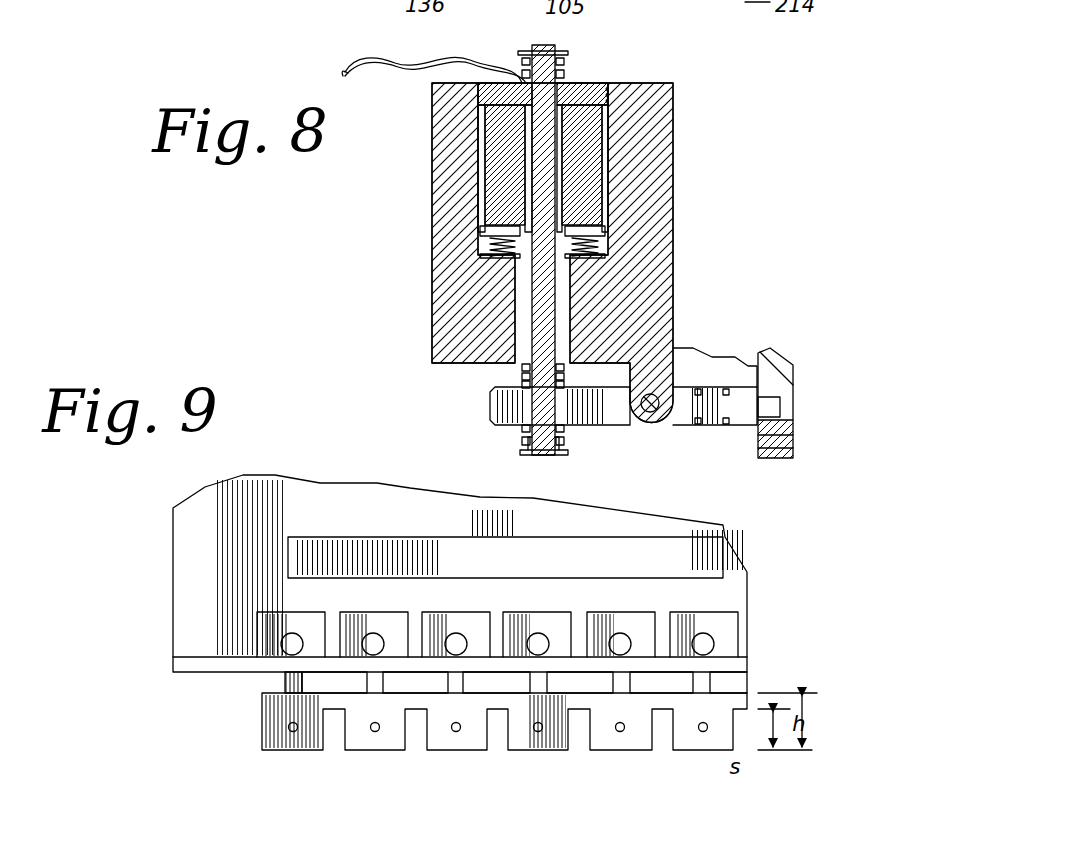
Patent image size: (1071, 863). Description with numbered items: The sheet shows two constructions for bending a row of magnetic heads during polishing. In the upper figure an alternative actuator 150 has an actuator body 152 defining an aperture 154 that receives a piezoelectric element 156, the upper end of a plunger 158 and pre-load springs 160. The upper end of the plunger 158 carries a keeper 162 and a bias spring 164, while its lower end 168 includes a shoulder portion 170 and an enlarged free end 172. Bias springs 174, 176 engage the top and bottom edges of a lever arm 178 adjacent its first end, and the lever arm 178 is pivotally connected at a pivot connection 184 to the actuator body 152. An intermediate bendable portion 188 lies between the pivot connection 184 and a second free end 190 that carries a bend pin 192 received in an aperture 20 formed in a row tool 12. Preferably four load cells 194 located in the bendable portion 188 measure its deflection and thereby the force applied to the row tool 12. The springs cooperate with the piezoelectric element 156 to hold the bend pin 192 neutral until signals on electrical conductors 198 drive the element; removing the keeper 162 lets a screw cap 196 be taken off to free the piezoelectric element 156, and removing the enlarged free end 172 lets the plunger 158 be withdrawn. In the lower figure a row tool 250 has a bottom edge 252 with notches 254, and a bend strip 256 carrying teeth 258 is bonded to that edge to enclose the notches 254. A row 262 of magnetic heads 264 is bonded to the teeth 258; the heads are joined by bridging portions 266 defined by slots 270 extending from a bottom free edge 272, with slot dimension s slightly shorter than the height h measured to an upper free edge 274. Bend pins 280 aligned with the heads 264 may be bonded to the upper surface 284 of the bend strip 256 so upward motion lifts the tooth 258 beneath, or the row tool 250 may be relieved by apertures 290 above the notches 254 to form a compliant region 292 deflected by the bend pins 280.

In FIG. 8, the row tool 12 is at (780, 363).
In FIG. 8, the aperture 20 is at (793, 410).
In FIG. 8, the actuator 150 is at (662, 80).
In FIG. 8, the actuator body 152 is at (440, 208).
In FIG. 8, the aperture 154 is at (603, 193).
In FIG. 8, the piezoelectric element 156 is at (585, 184).
In FIG. 8, the plunger 158 is at (557, 278).
In FIG. 8, the pre-load springs 160 is at (600, 248).
In FIG. 8, the keeper 162 is at (552, 52).
In FIG. 8, the bias spring 164 is at (553, 77).
In FIG. 8, the lower end 168 is at (543, 408).
In FIG. 8, the shoulder portion 170 is at (527, 347).
In FIG. 8, the enlarged free end 172 is at (537, 450).
In FIG. 8, the bias spring 174 is at (563, 378).
In FIG. 8, the bias spring 176 is at (560, 428).
In FIG. 8, the lever arm 178 is at (488, 402).
In FIG. 8, the pivot connection 184 is at (650, 397).
In FIG. 8, the intermediate bendable portion 188 is at (707, 403).
In FIG. 8, the second free end 190 is at (747, 373).
In FIG. 8, the bend pin 192 is at (782, 400).
In FIG. 8, the load cells 194 is at (700, 387).
In FIG. 8, the screw cap 196 is at (585, 82).
In FIG. 8, the electrical conductors 198 is at (395, 72).
In FIG. 9, the row tool 250 is at (320, 483).
In FIG. 9, the bottom edge 252 is at (228, 658).
In FIG. 9, the notches 254 is at (360, 612).
In FIG. 9, the bend strip 256 is at (750, 678).
In FIG. 9, the teeth 258 is at (447, 680).
In FIG. 9, the row 262 is at (258, 700).
In FIG. 9, the magnetic heads 264 is at (263, 742).
In FIG. 9, the bridging portions 266 is at (413, 703).
In FIG. 9, the slots 270 is at (333, 730).
In FIG. 9, the bottom free edge 272 is at (300, 750).
In FIG. 9, the upper free edge 274 is at (745, 693).
In FIG. 9, the bend pins 280 is at (292, 640).
In FIG. 9, the upper surface 284 is at (260, 643).
In FIG. 9, the apertures 290 is at (433, 547).
In FIG. 9, the compliant region 292 is at (652, 588).